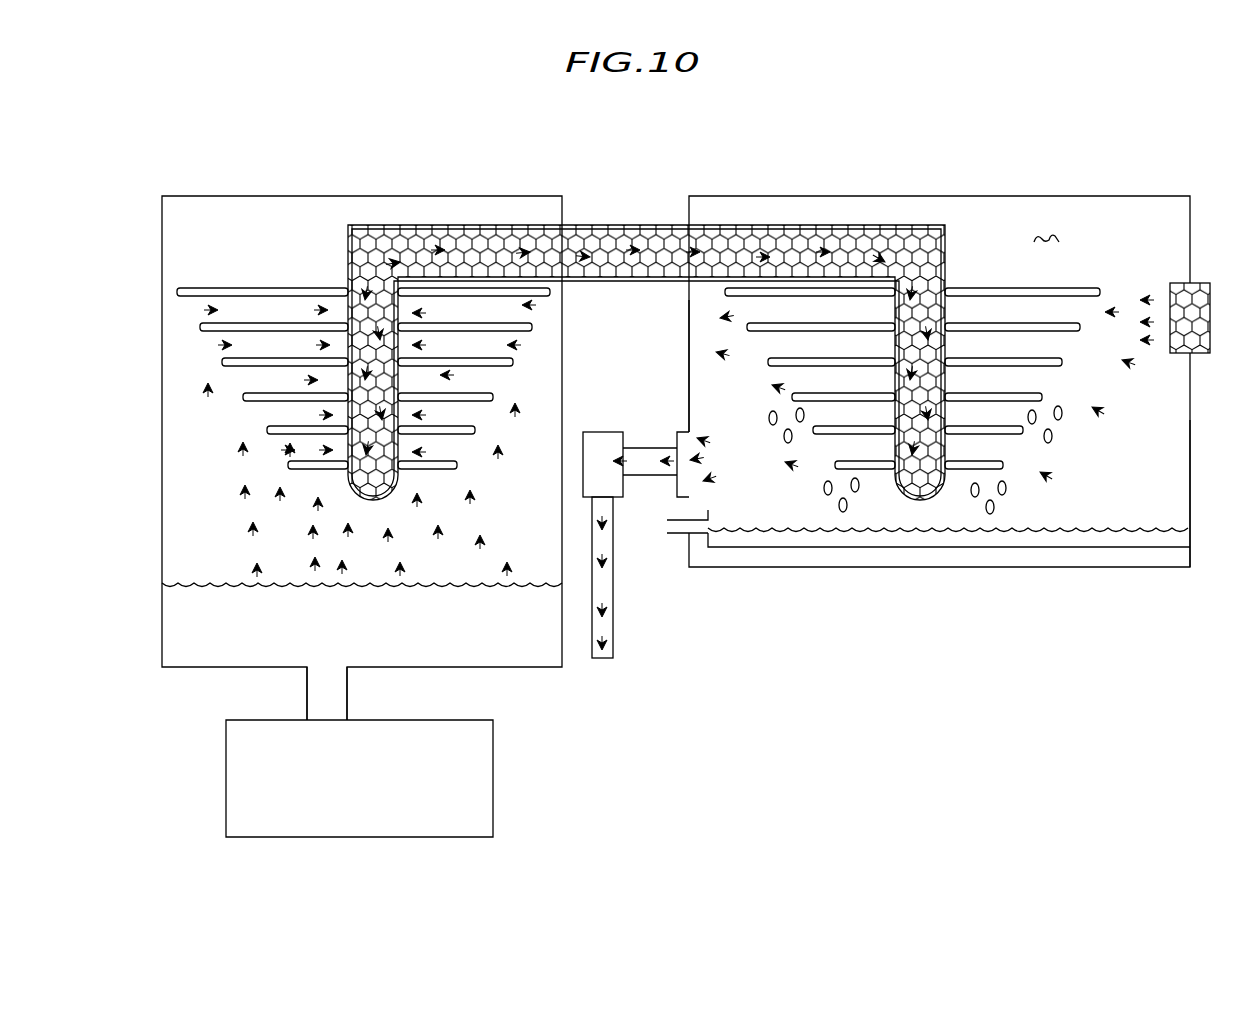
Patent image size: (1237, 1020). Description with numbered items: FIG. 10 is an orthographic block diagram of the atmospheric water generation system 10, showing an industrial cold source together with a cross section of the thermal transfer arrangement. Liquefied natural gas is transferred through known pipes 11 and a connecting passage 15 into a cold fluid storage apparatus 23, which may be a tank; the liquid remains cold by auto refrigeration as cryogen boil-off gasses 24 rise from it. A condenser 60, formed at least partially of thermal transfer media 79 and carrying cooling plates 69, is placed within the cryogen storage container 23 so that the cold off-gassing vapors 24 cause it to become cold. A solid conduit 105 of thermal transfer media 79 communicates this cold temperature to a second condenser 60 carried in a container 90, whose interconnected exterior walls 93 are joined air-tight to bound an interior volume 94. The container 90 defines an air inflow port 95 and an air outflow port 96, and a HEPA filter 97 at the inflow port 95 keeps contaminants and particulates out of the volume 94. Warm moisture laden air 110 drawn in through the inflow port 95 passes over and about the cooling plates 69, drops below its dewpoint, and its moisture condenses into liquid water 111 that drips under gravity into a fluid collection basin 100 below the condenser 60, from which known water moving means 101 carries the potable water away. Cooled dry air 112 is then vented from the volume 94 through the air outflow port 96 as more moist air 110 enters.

The evaporator vessel 10 is at (266, 192).
The pipes 11 is at (358, 704).
The neck passage 15 is at (326, 700).
The cold fluid storage apparatus 23 is at (380, 777).
The cryogen boil-off gasses 24 is at (440, 527).
The condenser 60 is at (232, 280).
The cooling plates 69 is at (498, 337).
The thermal transfer media 79 is at (268, 291).
The container 90 is at (920, 192).
The exterior walls 93 is at (688, 325).
The interior volume 94 is at (1050, 238).
The air inflow port 95 is at (1212, 354).
The air outflow port 96 is at (683, 432).
The HEPA filter 97 is at (1170, 292).
The fluid collection basin 100 is at (884, 549).
The water moving means 101 is at (667, 528).
The solid conduit 105 is at (630, 216).
The warm moisture laden air 110 is at (1150, 347).
The liquid water 111 is at (1053, 437).
The cooled dry air 112 is at (706, 436).